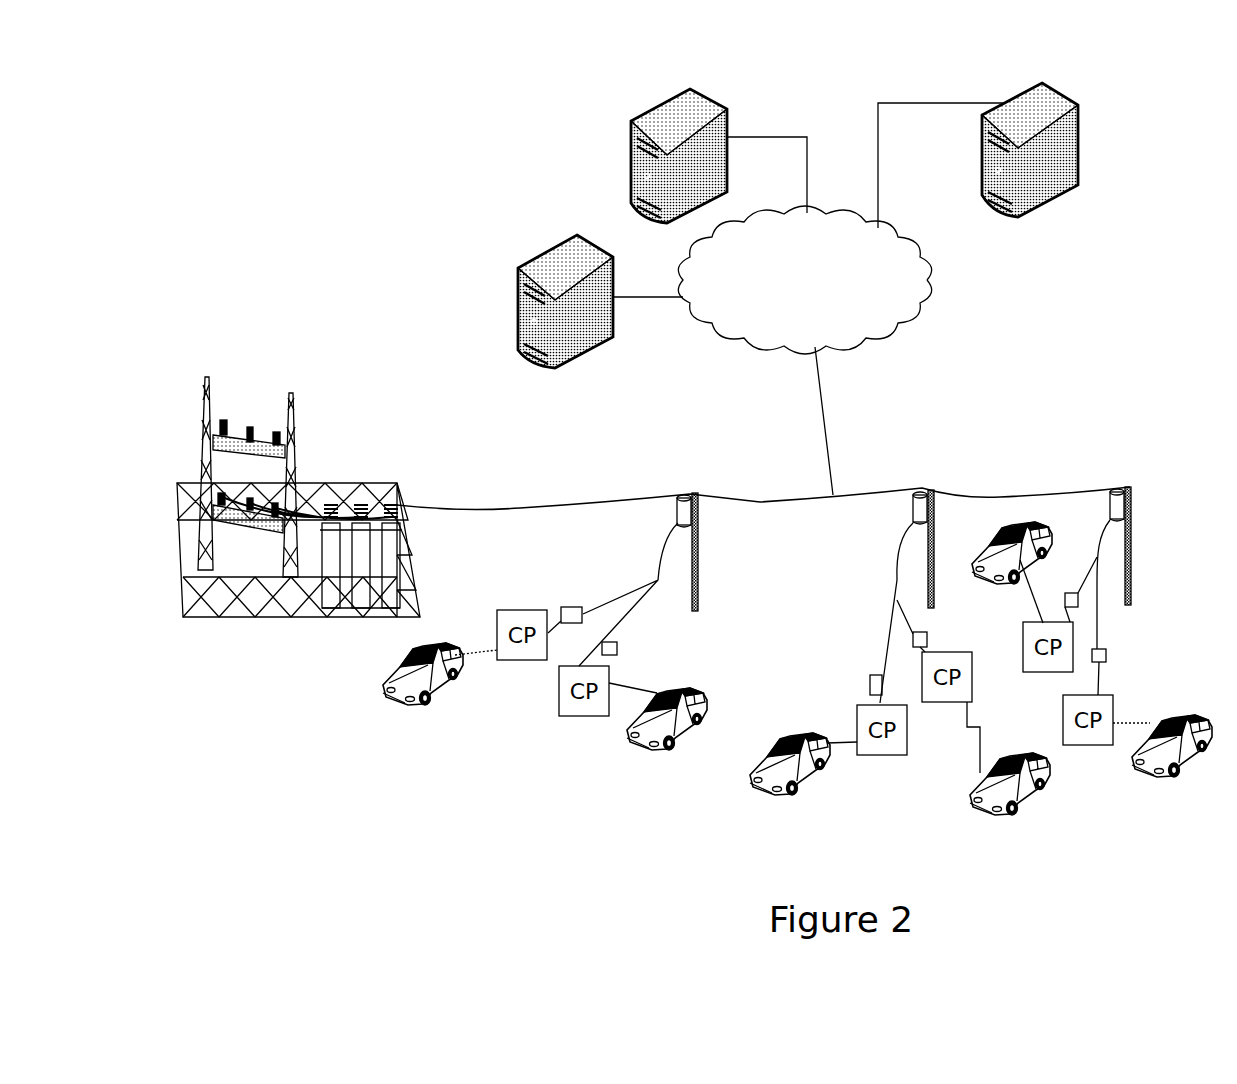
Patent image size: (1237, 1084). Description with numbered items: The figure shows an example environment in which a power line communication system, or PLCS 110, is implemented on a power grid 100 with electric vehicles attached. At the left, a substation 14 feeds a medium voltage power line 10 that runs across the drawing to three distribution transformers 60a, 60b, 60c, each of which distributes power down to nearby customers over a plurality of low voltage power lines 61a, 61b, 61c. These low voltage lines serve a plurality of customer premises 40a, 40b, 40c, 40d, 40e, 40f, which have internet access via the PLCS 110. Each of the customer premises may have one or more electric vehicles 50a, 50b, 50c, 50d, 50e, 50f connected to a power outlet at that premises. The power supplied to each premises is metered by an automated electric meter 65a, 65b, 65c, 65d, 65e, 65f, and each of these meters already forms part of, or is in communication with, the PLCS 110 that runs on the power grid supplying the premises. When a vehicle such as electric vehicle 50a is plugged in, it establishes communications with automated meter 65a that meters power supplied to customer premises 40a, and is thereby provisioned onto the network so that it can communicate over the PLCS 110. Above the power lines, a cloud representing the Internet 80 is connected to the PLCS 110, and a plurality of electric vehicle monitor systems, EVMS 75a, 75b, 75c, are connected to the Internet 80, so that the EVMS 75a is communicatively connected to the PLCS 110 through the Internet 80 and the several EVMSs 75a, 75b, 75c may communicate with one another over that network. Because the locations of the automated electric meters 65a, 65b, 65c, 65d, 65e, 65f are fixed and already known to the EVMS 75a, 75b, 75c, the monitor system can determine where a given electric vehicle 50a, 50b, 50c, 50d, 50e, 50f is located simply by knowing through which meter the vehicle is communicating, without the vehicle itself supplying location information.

The medium voltage power line 10 is at (548, 503).
The substation 14 is at (298, 527).
The customer premises 40a is at (523, 660).
The customer premises 40b is at (588, 715).
The customer premises 40c is at (855, 728).
The customer premises 40d is at (935, 702).
The customer premises 40e is at (1037, 672).
The customer premises 40f is at (1082, 745).
The electric vehicle 50a is at (413, 707).
The electric vehicle 50b is at (682, 732).
The electric vehicle 50c is at (805, 775).
The electric vehicle 50d is at (1007, 810).
The electric vehicle 50e is at (987, 552).
The electric vehicle 50f is at (1190, 757).
The distribution transformer 60a is at (694, 494).
The distribution transformer 60b is at (920, 490).
The distribution transformer 60c is at (1115, 490).
The low voltage power line 61a is at (660, 590).
The low voltage power line 61b is at (920, 620).
The low voltage power line 61c is at (1102, 623).
The automated electric meter 65a is at (573, 603).
The automated electric meter 65b is at (620, 645).
The automated electric meter 65c is at (872, 675).
The automated electric meter 65d is at (927, 635).
The automated electric meter 65e is at (1065, 595).
The automated electric meter 65f is at (1106, 655).
The electric vehicle monitor system 75a is at (550, 250).
The electric vehicle monitor system 75b is at (718, 103).
The electric vehicle monitor system 75c is at (1073, 100).
The Internet 80 is at (915, 252).
The power grid 100 is at (305, 715).
The power line communication system 110 is at (1020, 320).